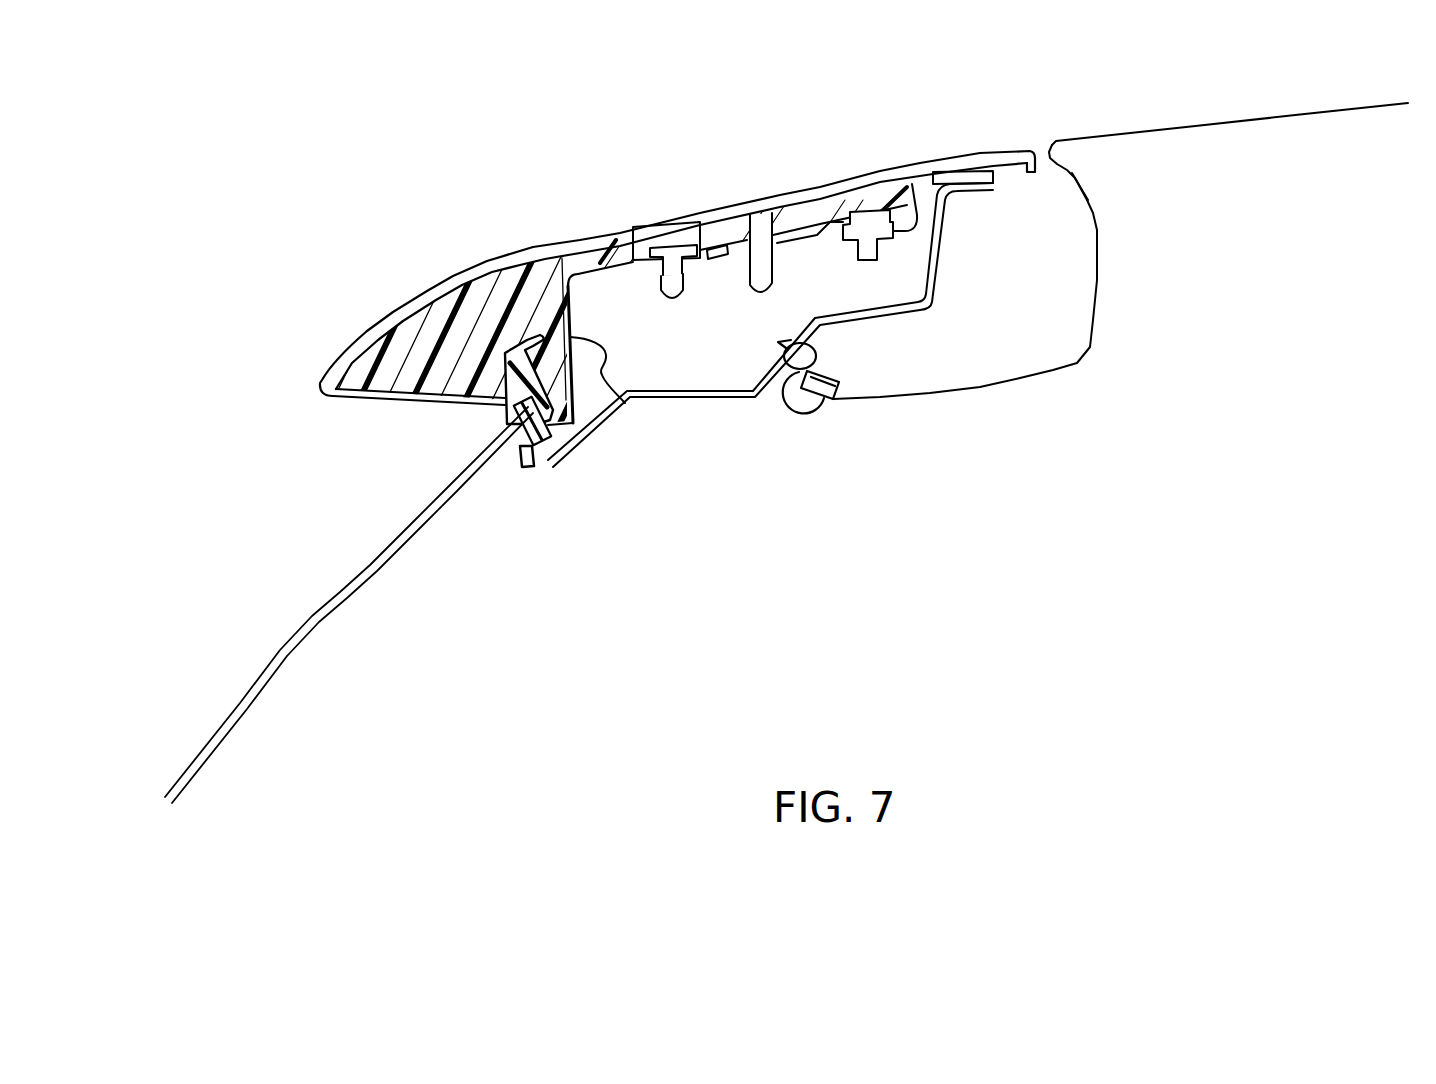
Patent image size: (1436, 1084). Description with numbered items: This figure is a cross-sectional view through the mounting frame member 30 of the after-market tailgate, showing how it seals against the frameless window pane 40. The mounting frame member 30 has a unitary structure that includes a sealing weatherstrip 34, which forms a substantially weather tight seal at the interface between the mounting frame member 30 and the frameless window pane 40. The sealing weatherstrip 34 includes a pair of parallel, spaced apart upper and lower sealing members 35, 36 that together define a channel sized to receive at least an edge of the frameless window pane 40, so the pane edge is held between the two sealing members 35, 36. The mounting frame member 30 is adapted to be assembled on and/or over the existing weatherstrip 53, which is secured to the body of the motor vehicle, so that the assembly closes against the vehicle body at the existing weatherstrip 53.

The mounting frame member 30 is at (613, 390).
The sealing weatherstrip 34 is at (500, 366).
The upper sealing member 35 is at (507, 420).
The lower sealing member 36 is at (526, 467).
The frameless window pane 40 is at (305, 620).
The existing weatherstrip 53 is at (805, 415).